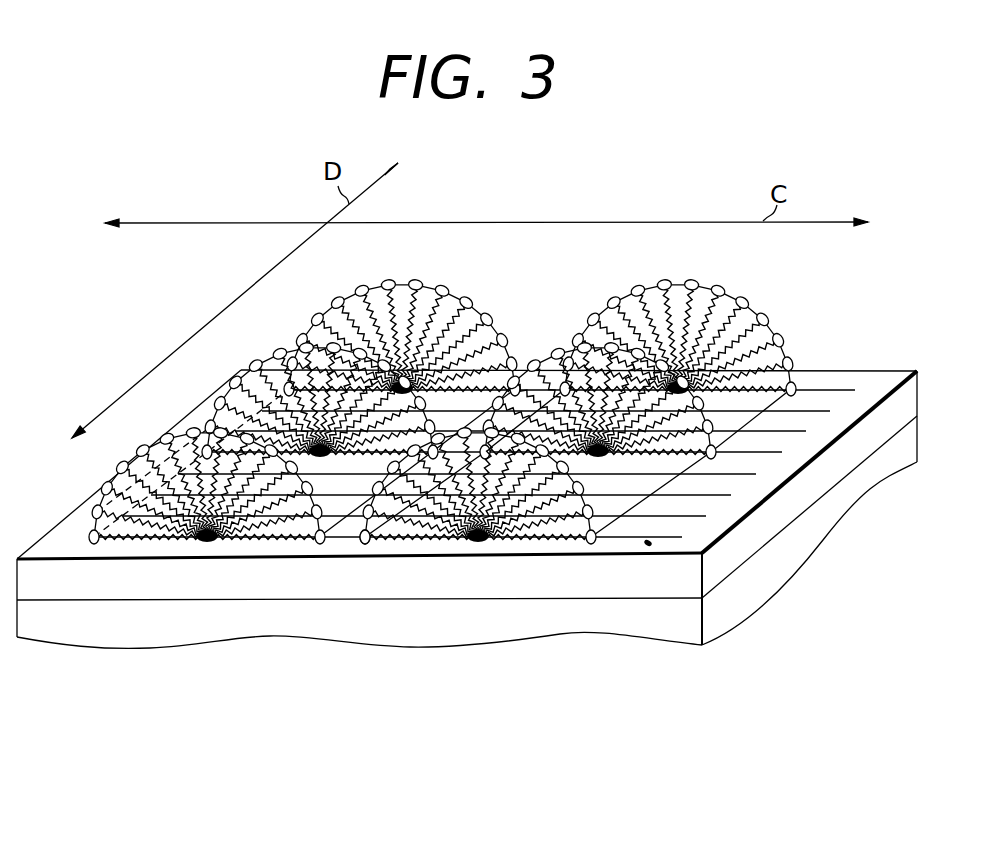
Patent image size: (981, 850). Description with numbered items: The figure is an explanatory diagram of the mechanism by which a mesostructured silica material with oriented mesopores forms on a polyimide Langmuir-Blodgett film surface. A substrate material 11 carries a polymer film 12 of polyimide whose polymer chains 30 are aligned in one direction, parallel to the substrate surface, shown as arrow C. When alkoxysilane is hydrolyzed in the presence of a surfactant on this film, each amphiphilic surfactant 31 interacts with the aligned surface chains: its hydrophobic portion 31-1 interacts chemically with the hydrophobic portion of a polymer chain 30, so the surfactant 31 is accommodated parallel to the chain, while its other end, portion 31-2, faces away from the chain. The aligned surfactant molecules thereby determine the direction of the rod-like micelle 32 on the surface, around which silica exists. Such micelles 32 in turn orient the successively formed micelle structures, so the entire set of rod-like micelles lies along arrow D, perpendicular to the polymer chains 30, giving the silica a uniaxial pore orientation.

The substrate material 11 is at (592, 622).
The polymer film 12 is at (513, 587).
The polymer chain 30 is at (636, 538).
The surfactant 31 is at (152, 543).
The hydrophobic portion 31-1 is at (408, 542).
The head group of molecule 31-2 is at (365, 542).
The rod-like micelle 32 is at (489, 311).